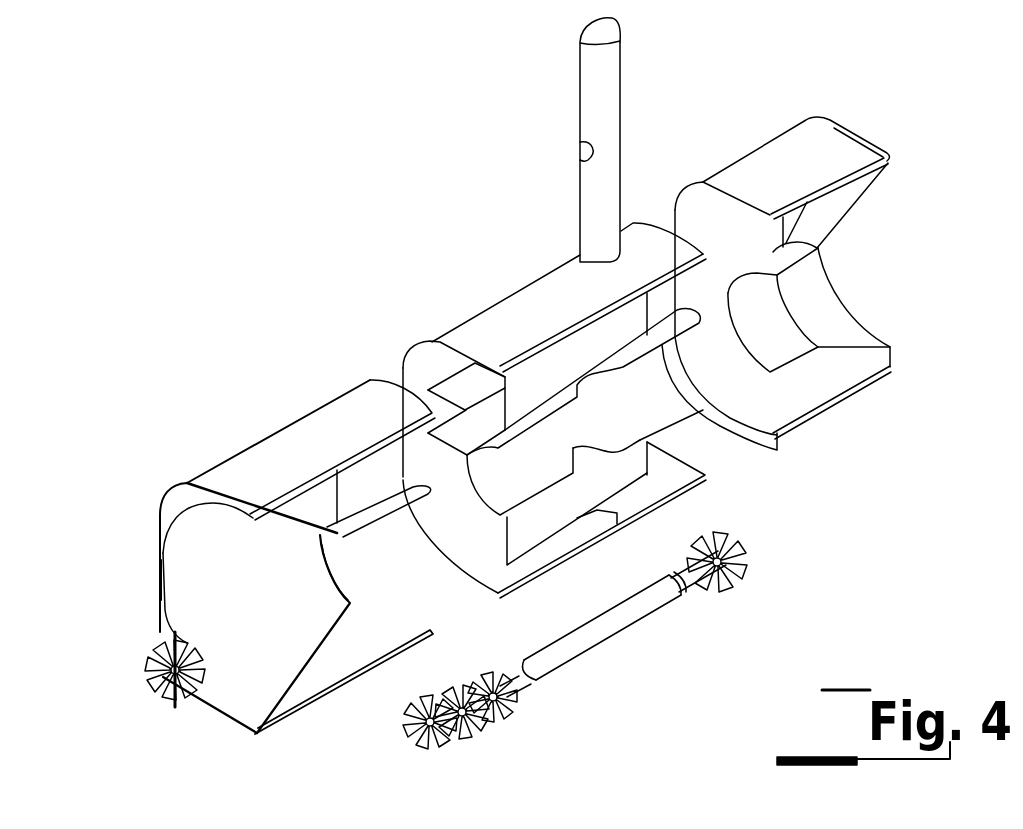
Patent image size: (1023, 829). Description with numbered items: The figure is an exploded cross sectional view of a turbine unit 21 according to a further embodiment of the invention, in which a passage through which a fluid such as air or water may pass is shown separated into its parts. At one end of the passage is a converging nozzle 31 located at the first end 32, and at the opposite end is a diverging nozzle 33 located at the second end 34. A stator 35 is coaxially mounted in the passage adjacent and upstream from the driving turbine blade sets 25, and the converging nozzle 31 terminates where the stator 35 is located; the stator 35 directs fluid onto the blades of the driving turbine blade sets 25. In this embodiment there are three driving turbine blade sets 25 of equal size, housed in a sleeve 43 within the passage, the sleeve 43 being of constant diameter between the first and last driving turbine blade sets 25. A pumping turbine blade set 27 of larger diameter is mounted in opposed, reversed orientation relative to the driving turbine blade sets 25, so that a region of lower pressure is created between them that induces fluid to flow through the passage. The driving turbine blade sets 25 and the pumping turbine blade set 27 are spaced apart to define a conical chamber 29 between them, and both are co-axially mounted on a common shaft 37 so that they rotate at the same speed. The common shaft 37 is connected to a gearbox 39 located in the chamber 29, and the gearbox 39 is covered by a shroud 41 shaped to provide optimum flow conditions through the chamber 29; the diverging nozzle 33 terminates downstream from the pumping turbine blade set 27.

The turbine unit 21 is at (262, 222).
The driving turbine blade set 25 is at (520, 713).
The pumping turbine blade set 27 is at (737, 547).
The chamber 29 is at (667, 408).
The converging nozzle 31 is at (255, 675).
The first end 32 is at (227, 653).
The diverging nozzle 33 is at (842, 323).
The second end 34 is at (864, 256).
The stator 35 is at (167, 690).
The common shaft 37 is at (610, 628).
The gearbox 39 is at (608, 75).
The shroud 41 is at (610, 142).
The sleeve 43 is at (373, 567).